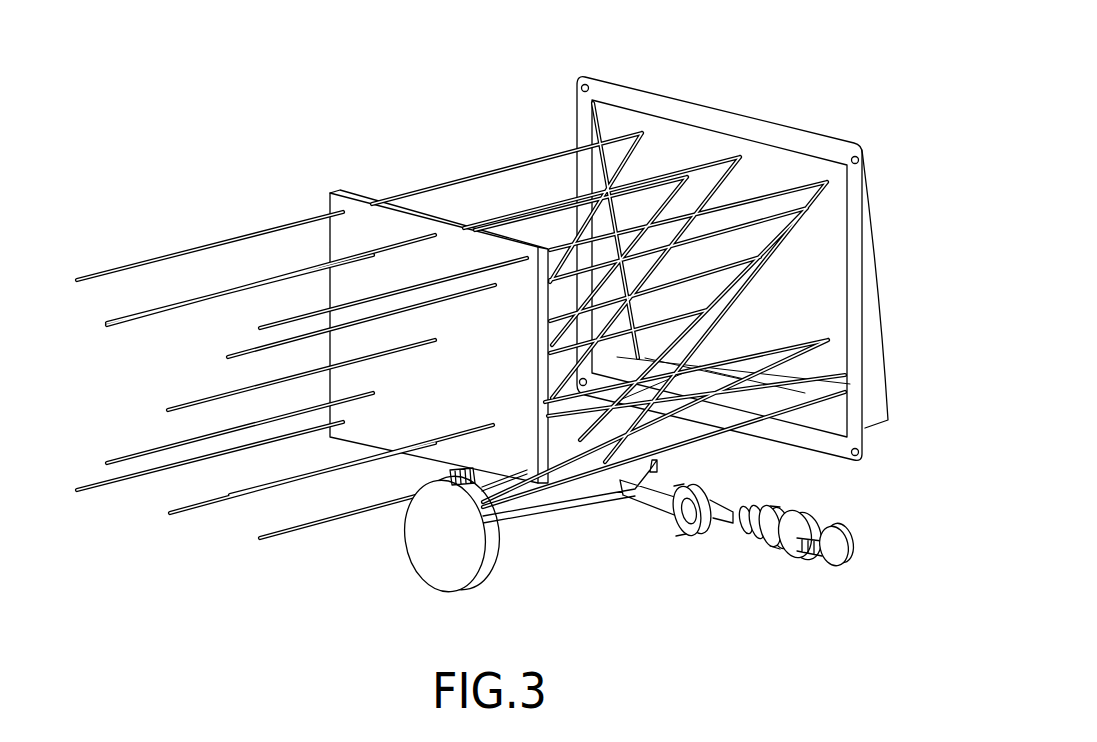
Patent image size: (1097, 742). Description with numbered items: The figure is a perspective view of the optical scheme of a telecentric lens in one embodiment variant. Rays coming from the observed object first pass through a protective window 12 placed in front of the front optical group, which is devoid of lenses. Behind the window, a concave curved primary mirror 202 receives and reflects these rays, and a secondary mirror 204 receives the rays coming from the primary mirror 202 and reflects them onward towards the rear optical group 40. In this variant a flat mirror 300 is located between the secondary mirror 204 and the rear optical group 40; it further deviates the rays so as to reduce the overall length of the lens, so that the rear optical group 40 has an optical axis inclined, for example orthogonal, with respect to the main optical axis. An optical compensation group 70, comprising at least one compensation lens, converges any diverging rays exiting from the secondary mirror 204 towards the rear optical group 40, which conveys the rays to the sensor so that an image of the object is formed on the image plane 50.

The protective window 12 is at (360, 222).
The concave curved primary mirror 202 is at (765, 173).
The secondary mirror 204 is at (437, 548).
The flat mirror 300 is at (653, 463).
The optical compensation group 70 is at (687, 544).
The rear optical group 40 is at (771, 573).
The image plane 50 is at (838, 548).